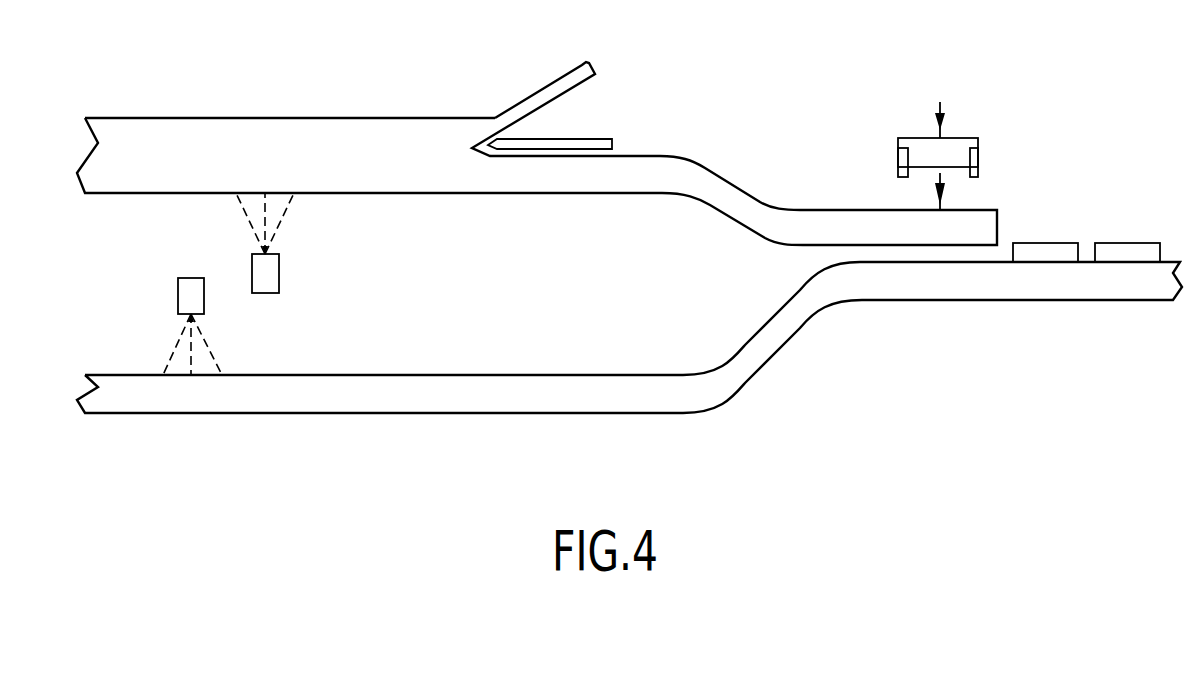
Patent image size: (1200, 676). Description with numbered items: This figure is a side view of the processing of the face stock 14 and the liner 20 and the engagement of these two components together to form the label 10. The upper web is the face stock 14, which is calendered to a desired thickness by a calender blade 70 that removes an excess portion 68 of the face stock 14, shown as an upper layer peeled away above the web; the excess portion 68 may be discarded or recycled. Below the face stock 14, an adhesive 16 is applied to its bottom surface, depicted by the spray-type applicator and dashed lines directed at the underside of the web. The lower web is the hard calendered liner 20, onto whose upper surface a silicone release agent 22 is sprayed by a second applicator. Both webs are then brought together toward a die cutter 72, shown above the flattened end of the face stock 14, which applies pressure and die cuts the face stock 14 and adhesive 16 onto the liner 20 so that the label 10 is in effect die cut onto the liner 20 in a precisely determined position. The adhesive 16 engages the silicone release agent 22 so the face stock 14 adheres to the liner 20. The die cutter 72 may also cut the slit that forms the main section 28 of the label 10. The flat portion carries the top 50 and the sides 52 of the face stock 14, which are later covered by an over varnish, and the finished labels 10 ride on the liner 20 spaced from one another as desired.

The label 10 is at (629, 326).
The face stock 14 is at (537, 132).
The adhesive 16 is at (282, 217).
The liner 20 is at (425, 402).
The silicone release agent 22 is at (207, 347).
The main section 28 is at (1028, 247).
The top 50 is at (720, 169).
The sides 52 is at (837, 231).
The excess portion 68 is at (547, 83).
The calender blade 70 is at (585, 139).
The die cutter 72 is at (970, 142).